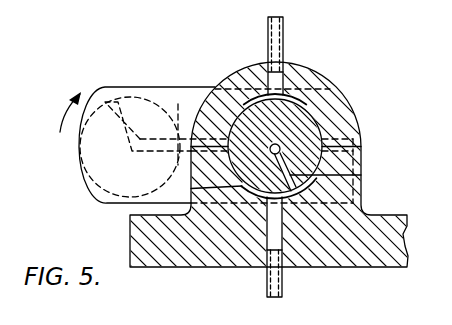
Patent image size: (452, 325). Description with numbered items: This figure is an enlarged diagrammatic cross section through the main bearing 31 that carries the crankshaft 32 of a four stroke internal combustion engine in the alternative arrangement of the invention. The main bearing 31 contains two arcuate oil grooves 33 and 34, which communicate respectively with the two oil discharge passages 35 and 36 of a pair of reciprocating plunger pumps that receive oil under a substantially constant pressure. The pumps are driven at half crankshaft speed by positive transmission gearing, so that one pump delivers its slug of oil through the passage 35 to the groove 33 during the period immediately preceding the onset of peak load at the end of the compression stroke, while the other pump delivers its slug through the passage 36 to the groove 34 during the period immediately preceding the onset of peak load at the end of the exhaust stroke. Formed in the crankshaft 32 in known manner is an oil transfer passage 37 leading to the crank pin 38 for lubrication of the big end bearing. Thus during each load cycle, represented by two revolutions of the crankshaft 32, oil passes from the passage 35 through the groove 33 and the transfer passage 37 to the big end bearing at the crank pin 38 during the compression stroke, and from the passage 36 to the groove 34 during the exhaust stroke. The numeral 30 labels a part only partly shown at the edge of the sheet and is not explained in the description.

The frame member 30 is at (0, 3).
The main bearing 31 is at (330, 100).
The crankshaft 32 is at (233, 122).
The arcuate oil groove 33 is at (200, 189).
The arcuate oil groove 34 is at (257, 97).
The oil discharge passage 35 is at (270, 278).
The oil discharge passage 36 is at (283, 34).
The oil transfer passage 37 is at (162, 119).
The crank pin 38 is at (88, 184).